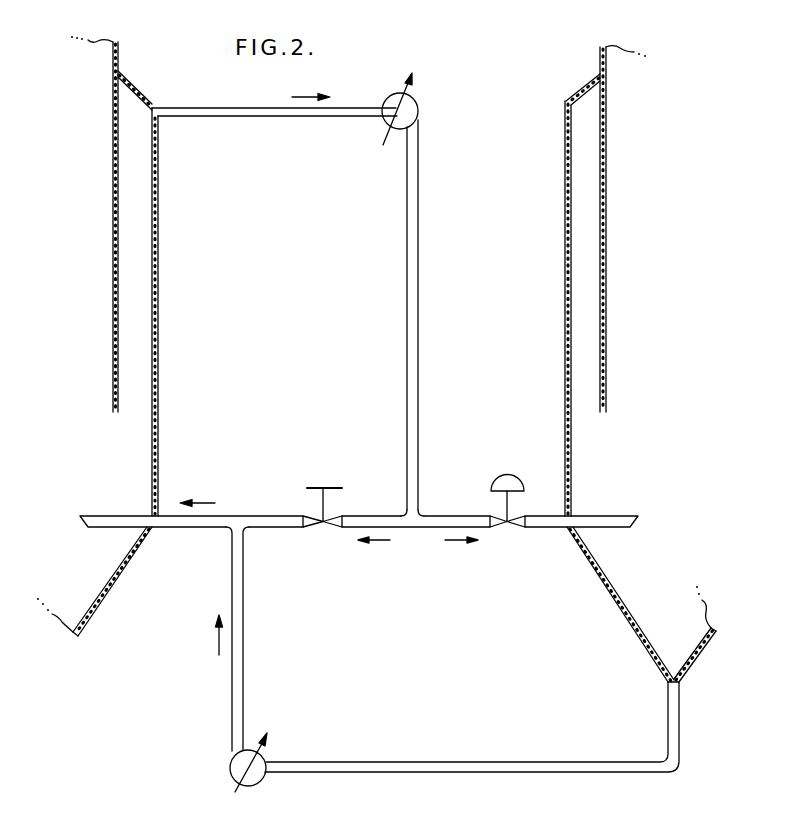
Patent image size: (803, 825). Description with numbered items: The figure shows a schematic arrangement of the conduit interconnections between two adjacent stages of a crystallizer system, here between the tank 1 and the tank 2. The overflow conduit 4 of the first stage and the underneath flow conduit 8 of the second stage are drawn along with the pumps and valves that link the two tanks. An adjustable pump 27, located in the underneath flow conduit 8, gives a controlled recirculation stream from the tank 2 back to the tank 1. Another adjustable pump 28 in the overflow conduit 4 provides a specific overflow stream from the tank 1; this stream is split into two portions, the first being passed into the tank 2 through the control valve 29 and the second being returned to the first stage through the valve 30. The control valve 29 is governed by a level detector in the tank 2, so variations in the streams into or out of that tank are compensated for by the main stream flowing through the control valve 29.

The tank 1 is at (95, 455).
The tank 2 is at (641, 455).
The overflow conduit 4 is at (237, 110).
The underneath flow conduit 8 is at (485, 772).
The adjustable pump 27 is at (251, 786).
The adjustable pump 28 is at (415, 112).
The control valve 29 is at (513, 527).
The valve 30 is at (330, 527).